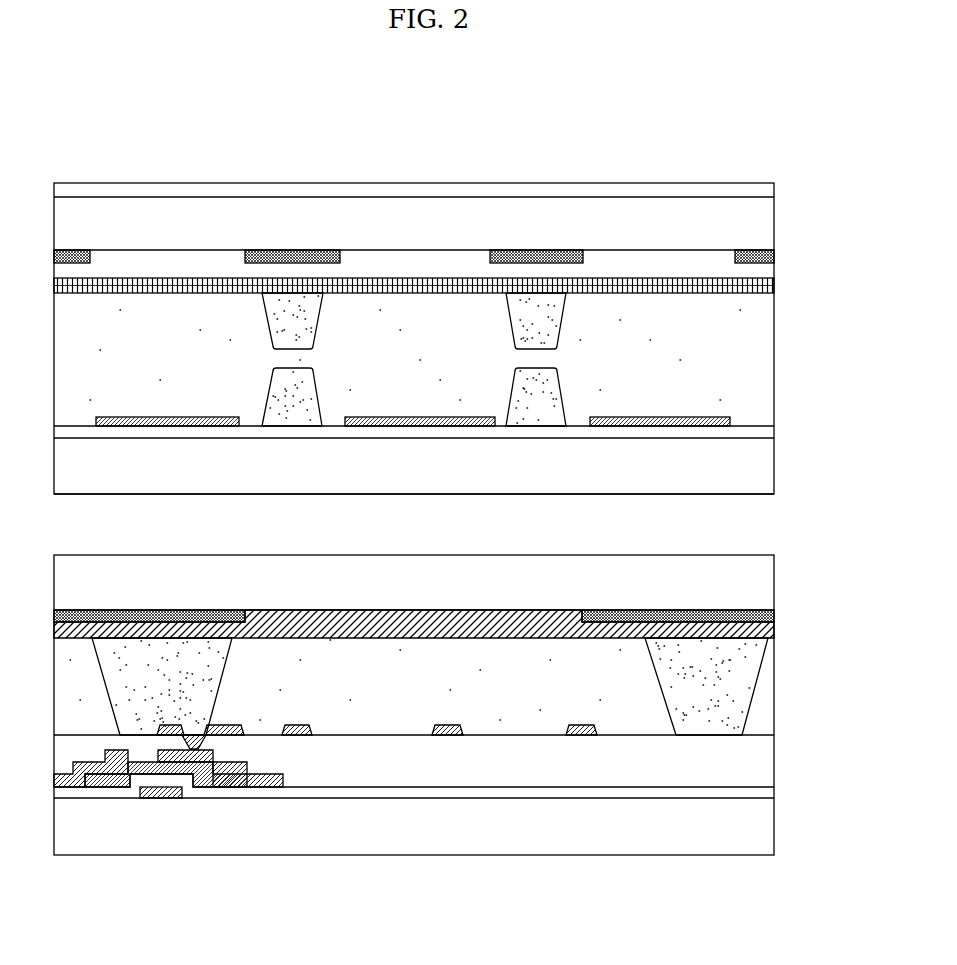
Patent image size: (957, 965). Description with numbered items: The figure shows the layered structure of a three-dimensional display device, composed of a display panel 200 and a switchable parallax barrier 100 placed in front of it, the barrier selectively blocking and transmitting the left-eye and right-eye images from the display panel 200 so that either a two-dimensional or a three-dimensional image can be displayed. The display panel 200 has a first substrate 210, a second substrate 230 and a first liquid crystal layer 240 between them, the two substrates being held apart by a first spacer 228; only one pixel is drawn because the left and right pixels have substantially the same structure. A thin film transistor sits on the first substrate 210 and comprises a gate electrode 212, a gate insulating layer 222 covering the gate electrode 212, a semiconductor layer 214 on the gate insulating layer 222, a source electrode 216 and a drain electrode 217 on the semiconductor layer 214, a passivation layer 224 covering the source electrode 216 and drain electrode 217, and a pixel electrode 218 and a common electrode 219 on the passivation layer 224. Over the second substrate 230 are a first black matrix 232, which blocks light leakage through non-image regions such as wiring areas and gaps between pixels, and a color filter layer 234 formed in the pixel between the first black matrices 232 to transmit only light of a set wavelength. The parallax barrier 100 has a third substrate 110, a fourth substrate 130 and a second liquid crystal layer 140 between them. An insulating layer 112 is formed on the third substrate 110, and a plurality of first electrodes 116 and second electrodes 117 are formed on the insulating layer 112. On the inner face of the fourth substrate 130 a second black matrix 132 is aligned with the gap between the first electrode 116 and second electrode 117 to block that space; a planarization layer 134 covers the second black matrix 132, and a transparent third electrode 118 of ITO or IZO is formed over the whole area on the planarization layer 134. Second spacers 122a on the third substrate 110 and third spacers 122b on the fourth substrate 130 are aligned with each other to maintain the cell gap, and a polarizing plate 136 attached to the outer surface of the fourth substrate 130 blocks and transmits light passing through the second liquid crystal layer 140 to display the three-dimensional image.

The switchable parallax barrier 100 is at (747, 150).
The third substrate 110 is at (775, 463).
The insulating layer 112 is at (775, 432).
The first electrode 116 is at (428, 428).
The second electrode 117 is at (740, 419).
The third electrode 118 is at (775, 287).
The second spacer 122a is at (533, 430).
The third spacer 122b is at (563, 318).
The fourth substrate 130 is at (775, 224).
The second black matrix 132 is at (537, 244).
The planarization layer 134 is at (775, 261).
The polarizing plate 136 is at (163, 190).
The second liquid crystal layer 140 is at (775, 346).
The display panel 200 is at (801, 572).
The first substrate 210 is at (775, 830).
The gate electrode 212 is at (160, 800).
The semiconductor layer 214 is at (210, 788).
The source electrode 216 is at (94, 788).
The drain electrode 217 is at (257, 788).
The pixel electrode 218 is at (445, 736).
The common electrode 219 is at (298, 736).
The gate insulating layer 222 is at (775, 793).
The passivation layer 224 is at (775, 758).
The first spacer 228 is at (760, 676).
The second substrate 230 is at (338, 590).
The first black matrix 232 is at (690, 611).
The color filter layer 234 is at (486, 629).
The first liquid crystal layer 240 is at (775, 700).